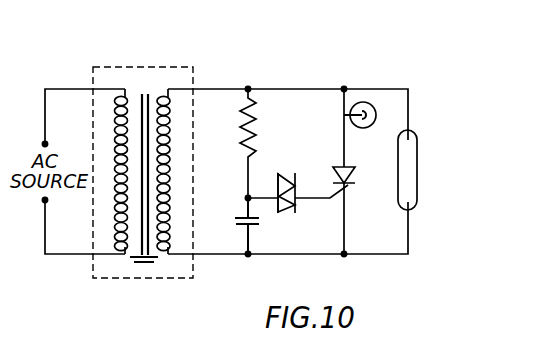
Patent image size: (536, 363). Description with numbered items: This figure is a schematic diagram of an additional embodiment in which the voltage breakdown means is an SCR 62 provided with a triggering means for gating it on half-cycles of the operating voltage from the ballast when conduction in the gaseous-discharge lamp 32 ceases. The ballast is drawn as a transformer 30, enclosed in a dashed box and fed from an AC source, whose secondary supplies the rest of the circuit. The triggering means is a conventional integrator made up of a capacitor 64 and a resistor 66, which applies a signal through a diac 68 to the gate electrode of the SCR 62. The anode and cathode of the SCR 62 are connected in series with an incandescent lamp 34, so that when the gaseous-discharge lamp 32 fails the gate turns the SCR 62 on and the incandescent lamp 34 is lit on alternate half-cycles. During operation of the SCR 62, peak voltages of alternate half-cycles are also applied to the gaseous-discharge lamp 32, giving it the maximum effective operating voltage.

The transformer 30 is at (121, 66).
The gaseous-discharge lamp 32 is at (398, 157).
The incandescent lamp 34 is at (349, 117).
The SCR 62 is at (337, 166).
The capacitor 64 is at (242, 225).
The resistor 66 is at (241, 149).
The diac 68 is at (297, 212).